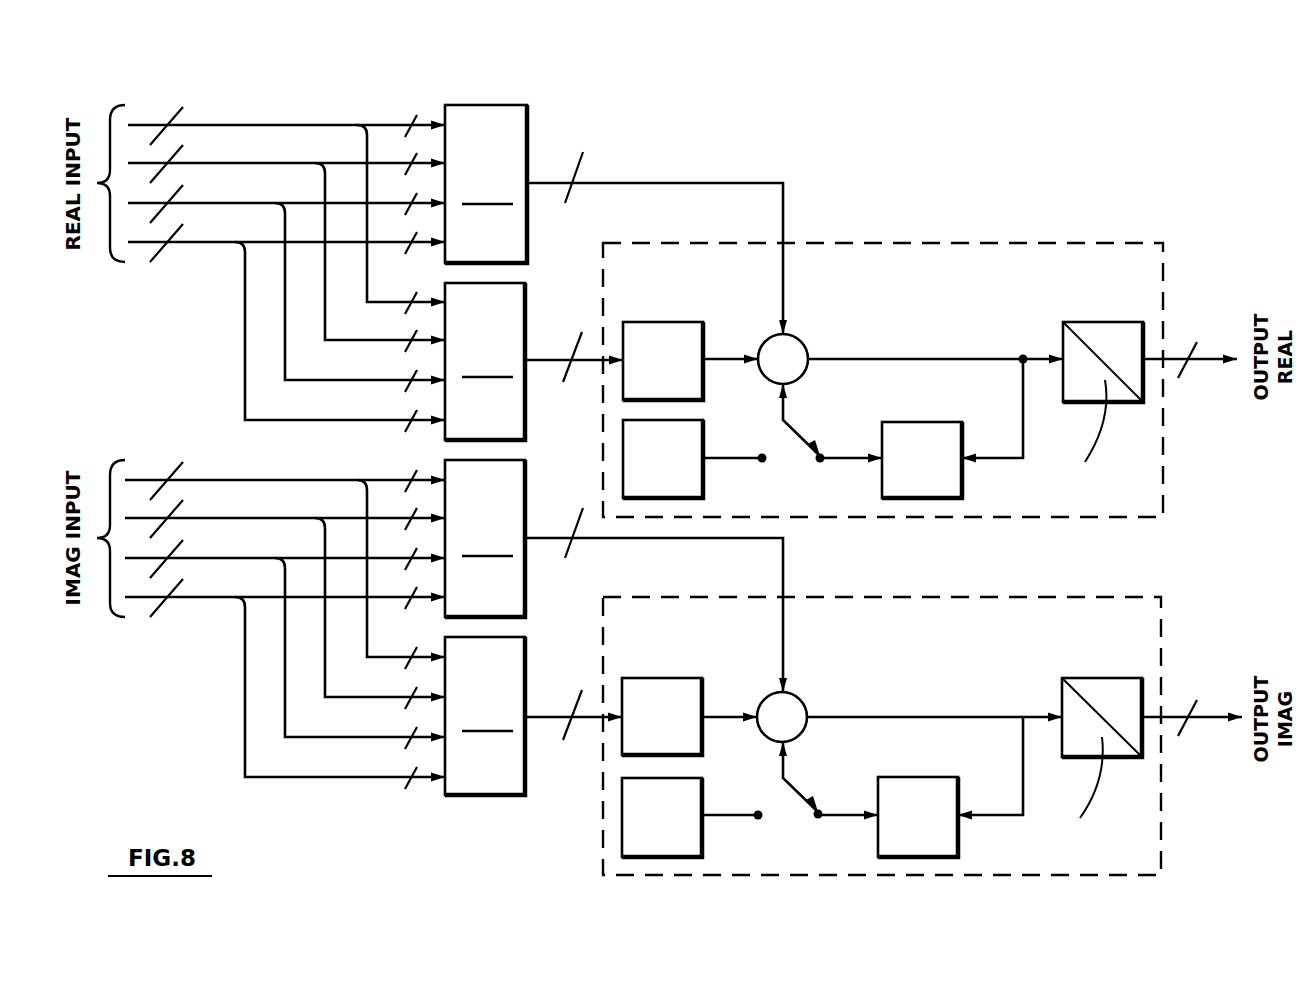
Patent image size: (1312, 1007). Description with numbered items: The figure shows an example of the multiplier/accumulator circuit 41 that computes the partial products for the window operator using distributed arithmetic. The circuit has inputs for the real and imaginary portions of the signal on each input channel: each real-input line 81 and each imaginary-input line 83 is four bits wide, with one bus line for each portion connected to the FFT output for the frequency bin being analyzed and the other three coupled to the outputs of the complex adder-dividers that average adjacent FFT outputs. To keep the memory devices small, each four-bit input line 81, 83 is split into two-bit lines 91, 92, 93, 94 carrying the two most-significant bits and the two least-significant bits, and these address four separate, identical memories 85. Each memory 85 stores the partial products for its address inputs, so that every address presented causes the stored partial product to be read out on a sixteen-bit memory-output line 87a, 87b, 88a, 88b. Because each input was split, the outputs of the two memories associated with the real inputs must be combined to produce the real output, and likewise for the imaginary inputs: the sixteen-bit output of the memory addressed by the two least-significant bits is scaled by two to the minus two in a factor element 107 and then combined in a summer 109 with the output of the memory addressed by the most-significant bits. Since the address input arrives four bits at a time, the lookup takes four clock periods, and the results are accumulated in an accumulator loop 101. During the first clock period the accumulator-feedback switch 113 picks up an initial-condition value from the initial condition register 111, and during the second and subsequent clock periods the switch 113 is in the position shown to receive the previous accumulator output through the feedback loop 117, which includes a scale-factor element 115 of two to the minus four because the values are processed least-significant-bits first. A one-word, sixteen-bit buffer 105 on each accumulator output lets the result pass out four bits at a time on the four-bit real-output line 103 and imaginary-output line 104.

The multiplier/accumulator circuit 41 is at (398, 801).
The real-input line 81 is at (235, 163).
The imaginary-input line 83 is at (240, 518).
The memory 85 is at (487, 125).
The memory-output line 87a is at (660, 183).
The memory-output line 87b is at (590, 355).
The memory-output line 88a is at (725, 540).
The memory-output line 88b is at (588, 715).
The two-bit line 91 is at (377, 163).
The two-bit line 92 is at (363, 265).
The two-bit line 93 is at (342, 517).
The two-bit line 94 is at (365, 622).
The accumulator loop 101 is at (1122, 568).
The real-output line 103 is at (1210, 364).
The imaginary-output line 104 is at (1216, 712).
The one-word buffer 105 is at (1095, 330).
The factor element 107 is at (658, 685).
The summer 109 is at (662, 327).
The initial condition register 111 is at (668, 480).
The accumulator-feedback switch 113 is at (797, 437).
The scale-factor element 115 is at (917, 422).
The feedback loop 117 is at (993, 462).